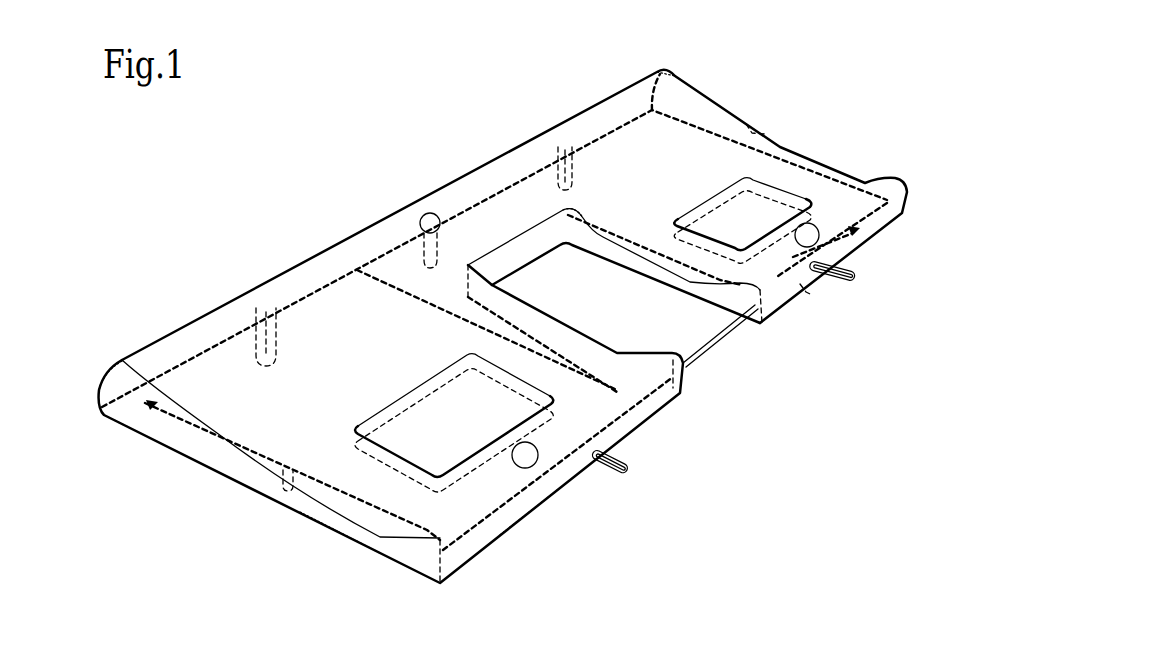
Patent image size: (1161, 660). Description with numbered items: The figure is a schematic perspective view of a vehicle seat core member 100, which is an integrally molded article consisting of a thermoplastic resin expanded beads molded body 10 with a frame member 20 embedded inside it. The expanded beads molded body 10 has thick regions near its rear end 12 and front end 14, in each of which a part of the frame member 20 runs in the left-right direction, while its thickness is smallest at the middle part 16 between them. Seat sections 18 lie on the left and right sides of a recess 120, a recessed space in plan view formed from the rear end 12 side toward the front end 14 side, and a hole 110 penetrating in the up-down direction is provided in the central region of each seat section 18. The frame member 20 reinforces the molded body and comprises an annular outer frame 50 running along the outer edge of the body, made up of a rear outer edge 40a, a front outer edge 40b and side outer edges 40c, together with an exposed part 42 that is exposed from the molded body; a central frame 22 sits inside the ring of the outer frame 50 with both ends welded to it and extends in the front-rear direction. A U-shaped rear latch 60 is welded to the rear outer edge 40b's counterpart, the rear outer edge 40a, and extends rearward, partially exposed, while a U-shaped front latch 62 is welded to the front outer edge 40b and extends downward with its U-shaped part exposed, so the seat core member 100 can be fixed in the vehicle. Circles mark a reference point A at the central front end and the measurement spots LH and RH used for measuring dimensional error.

The vehicle seat core member 100 is at (312, 196).
The thermoplastic resin expanded beads molded body 10 is at (230, 303).
The rear end 12 is at (537, 497).
The front end 14 is at (168, 335).
The middle part 16 is at (362, 540).
The seat section 18 is at (273, 407).
The frame member 20 is at (135, 418).
The central frame 22 is at (387, 268).
The rear outer edge 40a is at (812, 294).
The front outer edge 40b is at (533, 160).
The side outer edges 40c is at (287, 477).
The exposed part 42 is at (728, 338).
The outer frame 50 is at (875, 242).
The rear latch 60 is at (630, 473).
The front latch 62 is at (265, 305).
The hole 110 is at (467, 440).
The recess 120 is at (567, 287).
The reference point A is at (430, 212).
The measurement spot LH is at (537, 463).
The measurement spot RH is at (820, 240).